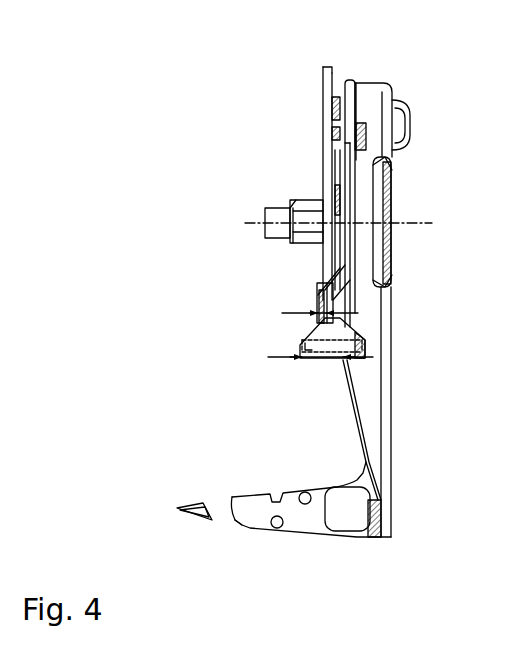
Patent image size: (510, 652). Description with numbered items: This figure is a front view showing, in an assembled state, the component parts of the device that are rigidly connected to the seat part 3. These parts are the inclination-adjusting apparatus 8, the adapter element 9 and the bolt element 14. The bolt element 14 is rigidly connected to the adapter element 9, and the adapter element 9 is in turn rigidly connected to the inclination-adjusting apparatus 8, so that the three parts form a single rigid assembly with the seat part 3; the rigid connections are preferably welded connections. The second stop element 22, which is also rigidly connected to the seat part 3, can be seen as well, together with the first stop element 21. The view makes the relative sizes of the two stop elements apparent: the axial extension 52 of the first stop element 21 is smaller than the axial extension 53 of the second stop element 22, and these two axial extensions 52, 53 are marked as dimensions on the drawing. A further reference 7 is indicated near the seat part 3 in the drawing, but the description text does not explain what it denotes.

The seat part 3 is at (375, 92).
The slot 7 is at (418, 226).
The inclination-adjusting apparatus 8 is at (349, 143).
The adapter element 9 is at (322, 72).
The bolt element 14 is at (270, 226).
The first stop element 21 is at (316, 298).
The second stop element 22 is at (300, 357).
The axial extension of the first stop element 52 is at (282, 313).
The axial extension of the second stop element 53 is at (311, 360).